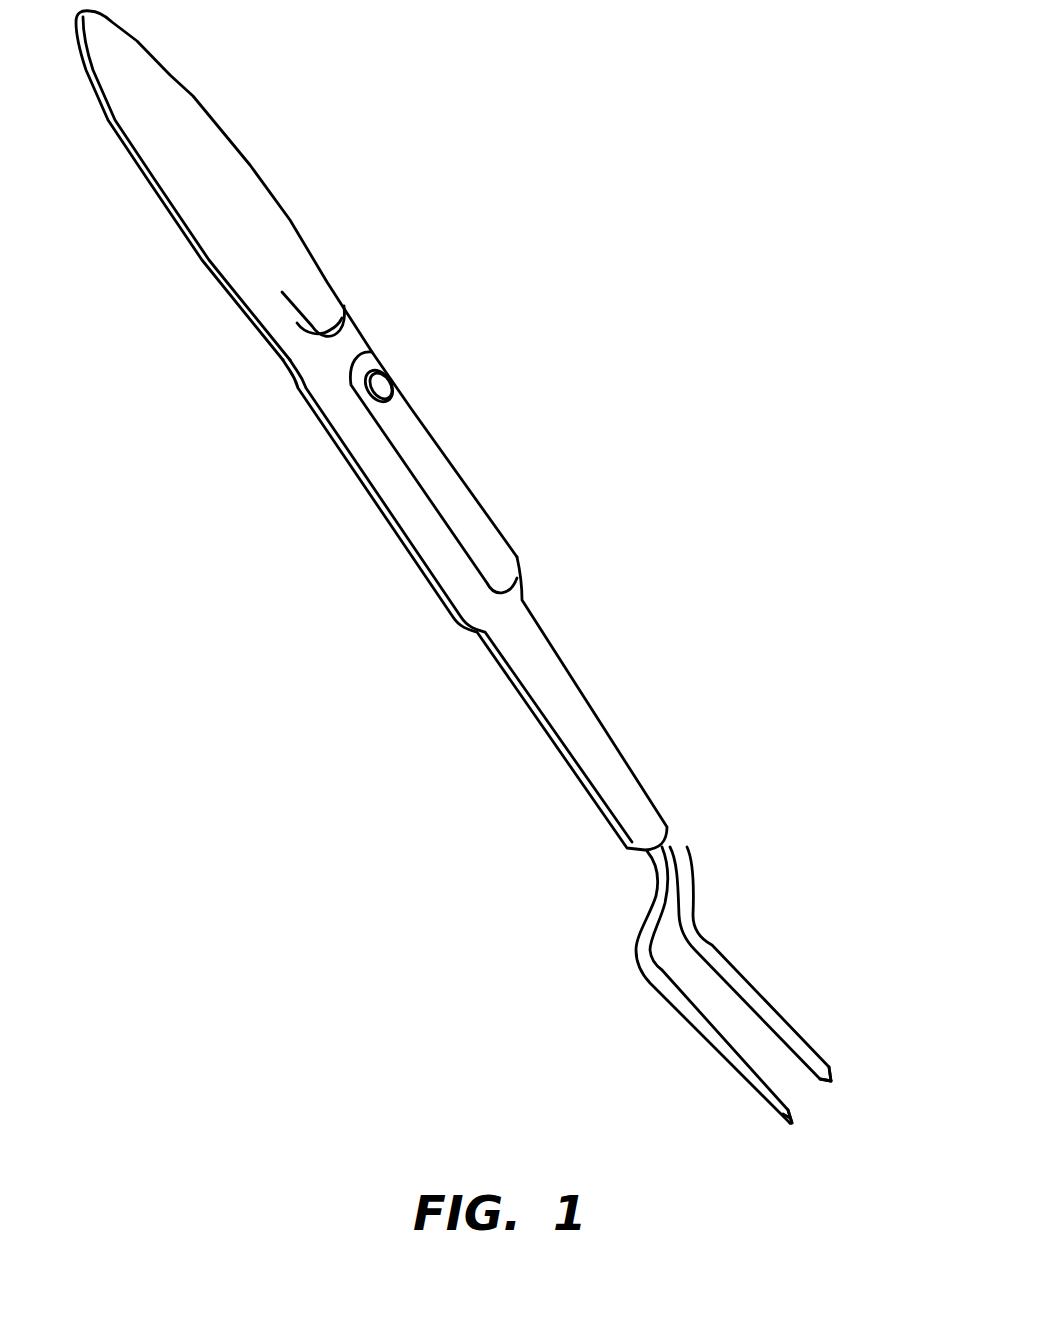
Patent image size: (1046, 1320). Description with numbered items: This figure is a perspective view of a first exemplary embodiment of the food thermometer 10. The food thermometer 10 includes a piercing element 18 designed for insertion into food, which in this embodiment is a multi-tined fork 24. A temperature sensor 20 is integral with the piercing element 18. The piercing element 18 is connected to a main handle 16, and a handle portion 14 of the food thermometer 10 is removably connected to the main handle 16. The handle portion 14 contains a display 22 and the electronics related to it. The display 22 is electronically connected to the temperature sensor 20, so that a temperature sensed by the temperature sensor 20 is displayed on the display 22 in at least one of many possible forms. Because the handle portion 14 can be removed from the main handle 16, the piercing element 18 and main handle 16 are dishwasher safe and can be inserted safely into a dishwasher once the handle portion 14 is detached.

The food thermometer 10 is at (508, 577).
The handle portion 14 is at (410, 412).
The main handle 16 is at (233, 165).
The piercing element 18 is at (706, 950).
The temperature sensor 20 is at (831, 1077).
The display 22 is at (477, 525).
The multi-tined fork 24 is at (843, 1080).